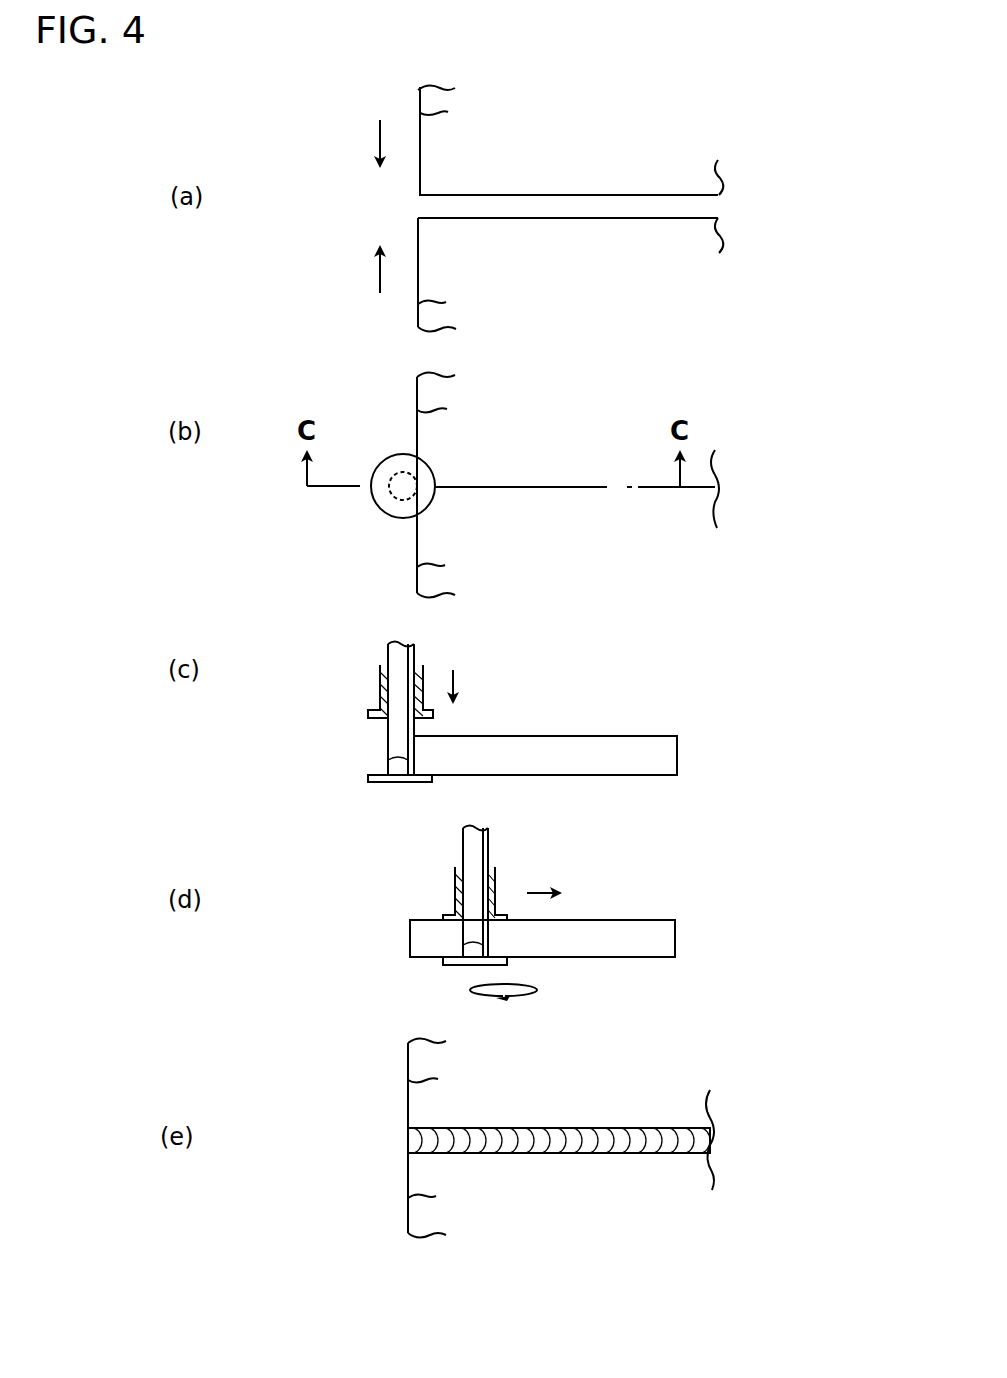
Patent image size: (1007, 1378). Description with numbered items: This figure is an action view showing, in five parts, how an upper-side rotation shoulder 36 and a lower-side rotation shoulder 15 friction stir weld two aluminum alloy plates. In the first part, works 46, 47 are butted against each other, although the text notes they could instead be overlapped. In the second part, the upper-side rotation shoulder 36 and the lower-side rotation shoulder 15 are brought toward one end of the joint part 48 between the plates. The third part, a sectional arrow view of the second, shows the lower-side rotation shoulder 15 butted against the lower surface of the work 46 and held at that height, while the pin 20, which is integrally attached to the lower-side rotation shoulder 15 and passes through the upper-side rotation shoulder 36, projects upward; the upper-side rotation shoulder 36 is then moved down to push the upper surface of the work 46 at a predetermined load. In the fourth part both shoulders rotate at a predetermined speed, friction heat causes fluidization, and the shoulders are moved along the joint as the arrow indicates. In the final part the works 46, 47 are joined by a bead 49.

The lower-side rotation shoulder 15 is at (368, 777).
The pin 20 is at (384, 748).
The upper-side rotation shoulder 36 is at (372, 502).
The work 46 is at (418, 105).
The work 47 is at (418, 311).
The joint part 48 is at (532, 486).
The bead 49 is at (550, 1140).